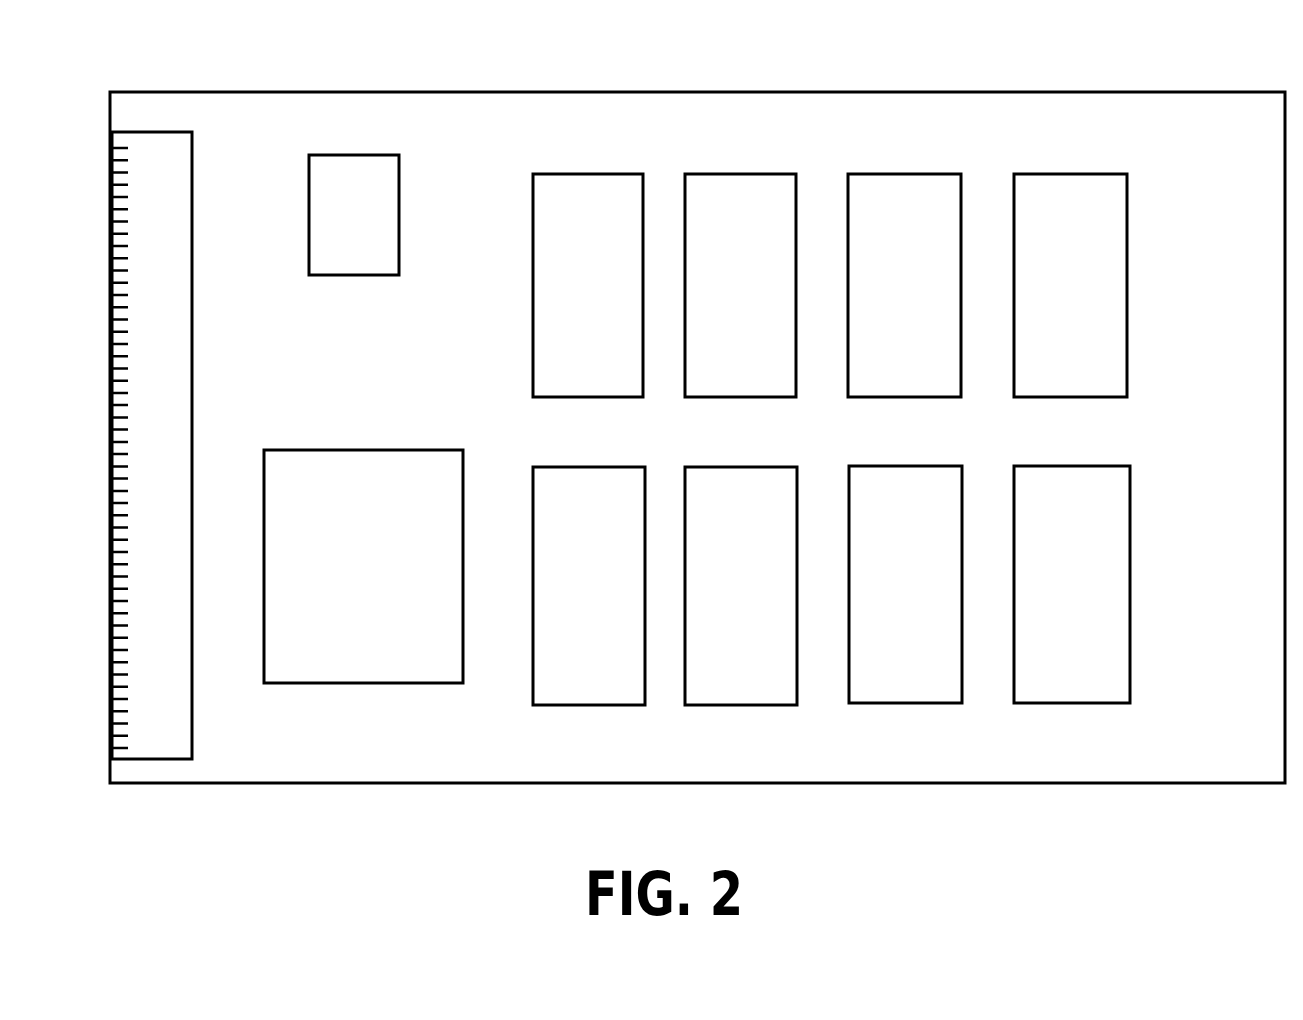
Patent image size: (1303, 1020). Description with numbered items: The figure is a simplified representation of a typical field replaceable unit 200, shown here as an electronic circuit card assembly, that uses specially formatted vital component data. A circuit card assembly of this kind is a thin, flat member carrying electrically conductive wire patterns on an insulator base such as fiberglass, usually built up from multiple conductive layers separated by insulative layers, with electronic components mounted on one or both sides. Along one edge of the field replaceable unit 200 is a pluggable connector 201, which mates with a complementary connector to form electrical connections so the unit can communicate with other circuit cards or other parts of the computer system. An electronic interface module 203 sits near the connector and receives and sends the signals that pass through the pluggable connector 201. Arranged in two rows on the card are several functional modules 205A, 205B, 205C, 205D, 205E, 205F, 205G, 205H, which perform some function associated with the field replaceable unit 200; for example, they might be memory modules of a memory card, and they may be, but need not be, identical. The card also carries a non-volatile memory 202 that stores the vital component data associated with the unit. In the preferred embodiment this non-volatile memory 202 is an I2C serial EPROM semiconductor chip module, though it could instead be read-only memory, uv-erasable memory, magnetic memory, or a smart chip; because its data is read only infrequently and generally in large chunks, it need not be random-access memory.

The field replaceable unit 200 is at (665, 77).
The pluggable connector 201 is at (181, 182).
The non-volatile memory 202 is at (378, 198).
The electronic interface module 203 is at (443, 494).
The functional module 205A is at (627, 217).
The functional module 205B is at (775, 217).
The functional module 205C is at (941, 217).
The functional module 205D is at (1107, 217).
The functional module 205E is at (627, 505).
The functional module 205F is at (775, 505).
The functional module 205G is at (940, 505).
The functional module 205H is at (1107, 505).